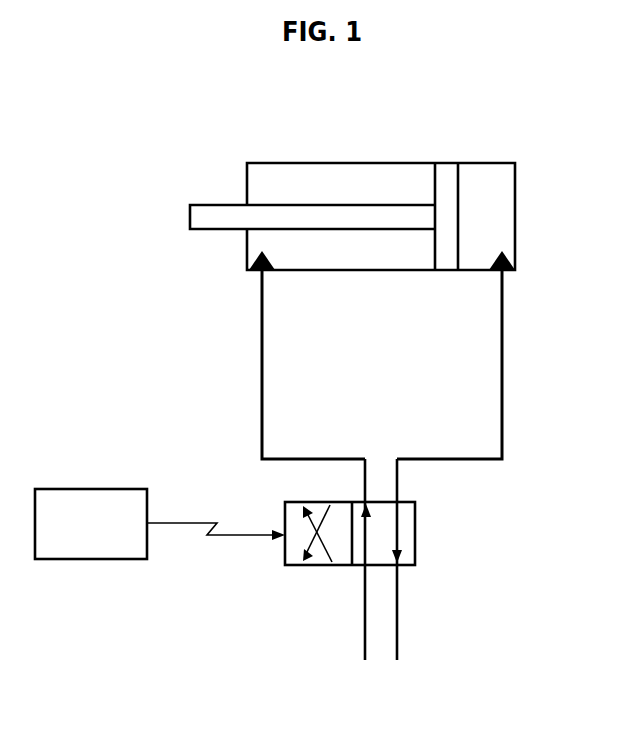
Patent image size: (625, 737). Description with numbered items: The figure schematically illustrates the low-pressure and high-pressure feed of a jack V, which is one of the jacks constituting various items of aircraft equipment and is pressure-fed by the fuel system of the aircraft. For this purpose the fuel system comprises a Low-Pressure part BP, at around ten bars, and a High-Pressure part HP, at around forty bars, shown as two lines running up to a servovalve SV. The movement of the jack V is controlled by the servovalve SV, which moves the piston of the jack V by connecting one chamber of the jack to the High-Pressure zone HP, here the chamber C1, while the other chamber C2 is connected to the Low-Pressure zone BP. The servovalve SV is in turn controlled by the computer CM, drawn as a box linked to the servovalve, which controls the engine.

The jack V is at (381, 164).
The chamber C1 is at (333, 183).
The other chamber C2 is at (485, 183).
The servovalve SV is at (418, 531).
The computer CM is at (91, 488).
The High-Pressure part HP is at (362, 622).
The Low-Pressure part BP is at (400, 622).